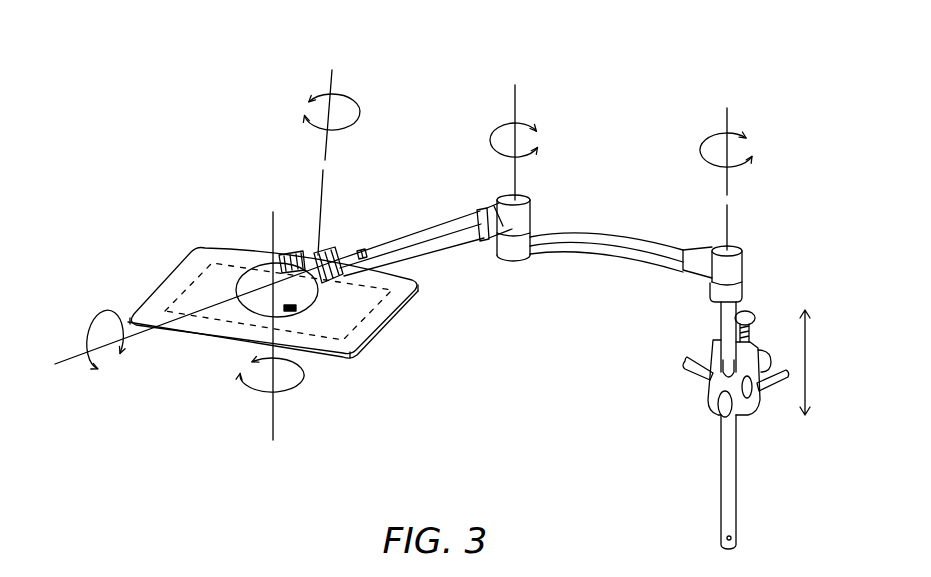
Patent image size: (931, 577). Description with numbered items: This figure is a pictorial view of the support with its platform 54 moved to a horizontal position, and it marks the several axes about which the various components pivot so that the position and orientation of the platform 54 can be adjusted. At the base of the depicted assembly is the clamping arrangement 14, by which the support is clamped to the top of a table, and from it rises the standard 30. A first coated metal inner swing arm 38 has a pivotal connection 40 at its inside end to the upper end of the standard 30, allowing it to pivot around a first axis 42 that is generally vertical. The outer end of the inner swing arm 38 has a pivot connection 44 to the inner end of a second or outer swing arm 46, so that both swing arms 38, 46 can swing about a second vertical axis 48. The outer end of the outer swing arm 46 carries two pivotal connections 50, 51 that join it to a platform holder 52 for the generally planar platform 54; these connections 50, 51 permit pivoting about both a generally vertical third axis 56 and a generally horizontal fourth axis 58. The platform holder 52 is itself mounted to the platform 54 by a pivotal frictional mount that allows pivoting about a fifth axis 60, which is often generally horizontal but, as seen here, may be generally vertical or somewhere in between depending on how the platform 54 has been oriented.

The clamping arrangement 14 is at (698, 338).
The standard 30 is at (722, 475).
The first coated metal inner swing arm 38 is at (598, 237).
The pivotal connection 40 is at (752, 272).
The first axis 42 is at (723, 118).
The pivot connection 44 is at (517, 262).
The second or outer swing arm 46 is at (443, 225).
The second vertical axis 48 is at (510, 93).
The pivotal connection 50 is at (323, 260).
The pivotal connection 51 is at (340, 265).
The platform holder 52 is at (222, 260).
The platform 54 is at (380, 330).
The third axis 56 is at (327, 80).
The fourth axis 58 is at (80, 355).
The fifth axis 60 is at (273, 422).